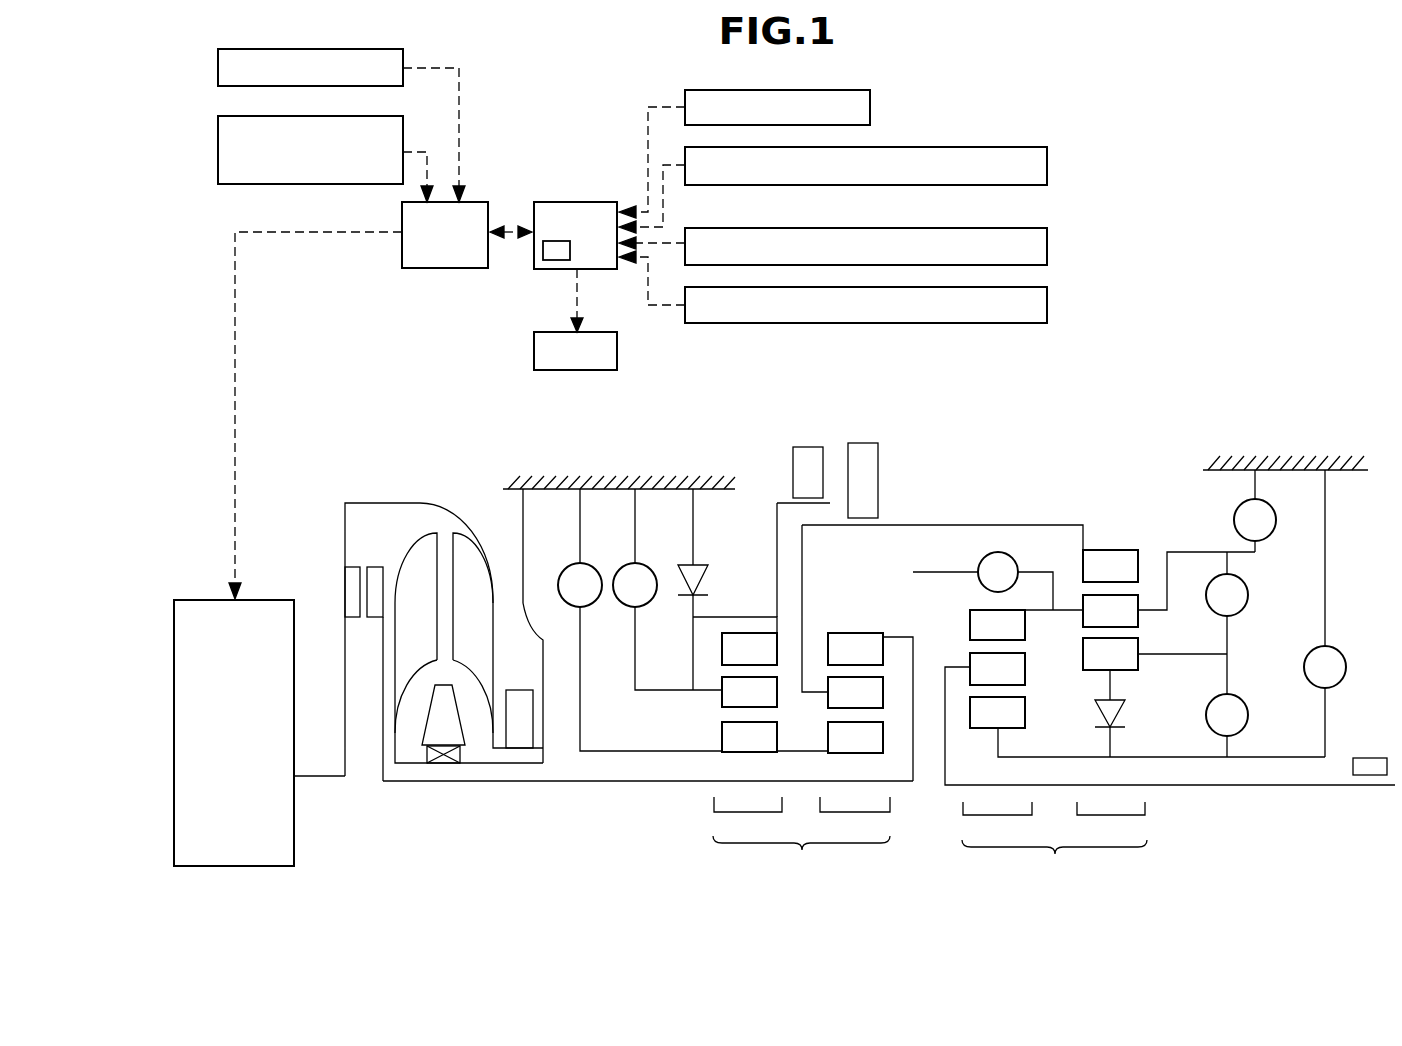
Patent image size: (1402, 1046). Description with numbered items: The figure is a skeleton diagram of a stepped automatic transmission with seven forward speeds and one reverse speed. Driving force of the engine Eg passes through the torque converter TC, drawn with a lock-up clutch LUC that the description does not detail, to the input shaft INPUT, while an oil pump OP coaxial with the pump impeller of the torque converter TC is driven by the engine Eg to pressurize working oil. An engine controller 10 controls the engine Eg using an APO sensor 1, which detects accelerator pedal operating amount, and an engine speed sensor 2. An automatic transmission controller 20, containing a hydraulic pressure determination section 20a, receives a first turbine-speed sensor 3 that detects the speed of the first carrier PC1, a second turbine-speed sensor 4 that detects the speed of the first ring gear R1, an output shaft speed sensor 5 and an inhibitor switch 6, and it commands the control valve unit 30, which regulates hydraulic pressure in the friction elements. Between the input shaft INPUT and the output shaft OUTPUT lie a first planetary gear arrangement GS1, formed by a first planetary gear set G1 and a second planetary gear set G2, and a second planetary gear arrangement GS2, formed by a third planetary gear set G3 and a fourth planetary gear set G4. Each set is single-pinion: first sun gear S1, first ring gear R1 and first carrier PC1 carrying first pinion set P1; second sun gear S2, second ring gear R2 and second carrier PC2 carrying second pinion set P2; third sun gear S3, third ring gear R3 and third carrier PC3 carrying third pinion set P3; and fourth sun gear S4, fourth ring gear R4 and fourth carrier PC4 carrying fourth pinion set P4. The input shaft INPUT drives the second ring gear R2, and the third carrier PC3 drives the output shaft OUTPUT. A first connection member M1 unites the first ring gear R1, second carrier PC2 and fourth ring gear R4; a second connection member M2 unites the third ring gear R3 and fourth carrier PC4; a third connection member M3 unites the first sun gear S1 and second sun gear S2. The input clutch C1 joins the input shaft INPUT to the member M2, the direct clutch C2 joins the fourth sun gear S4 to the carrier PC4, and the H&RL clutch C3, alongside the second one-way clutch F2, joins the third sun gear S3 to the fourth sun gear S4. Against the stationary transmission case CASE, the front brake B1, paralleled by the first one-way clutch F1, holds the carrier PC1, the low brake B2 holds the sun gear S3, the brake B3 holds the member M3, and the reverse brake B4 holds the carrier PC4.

The APO sensor 1 is at (218, 68).
The engine speed sensor 2 is at (218, 146).
The first turbine-speed sensor 3 is at (1047, 167).
The second turbine-speed sensor 4 is at (1047, 247).
The output shaft speed sensor 5 is at (1047, 307).
The inhibitor switch 6 is at (870, 107).
The engine controller (ECU) 10 is at (445, 268).
The automatic transmission controller (ATCU) 20 is at (568, 202).
The hydraulic pressure determination section 20a is at (556, 260).
The control valve unit (CVU) 30 is at (534, 351).
The engine Eg is at (263, 598).
The torque converter TC is at (438, 482).
The lockup clutch LUC is at (360, 548).
The oil pump OP is at (515, 690).
The transmission case CASE is at (603, 500).
The front brake B1 is at (667, 589).
The low brake B2 is at (1325, 613).
The 2346-brake B3 is at (640, 620).
The reverse brake B4 is at (1255, 511).
The input clutch C1 is at (968, 666).
The direct clutch C2 is at (1227, 623).
The H&RL clutch C3 is at (1227, 725).
The first one-way clutch F1 is at (710, 548).
The second one-way clutch F2 is at (1140, 716).
The first ring gear R1 is at (749, 649).
The first planet pinion set P1 is at (749, 692).
The first sun gear S1 is at (749, 737).
The first planet-pinion carrier PC1 is at (720, 693).
The second ring gear R2 is at (855, 649).
The second planet pinion set P2 is at (855, 692).
The second sun gear S2 is at (855, 737).
The second planet-pinion carrier PC2 is at (815, 693).
The third ring gear R3 is at (997, 625).
The third planet pinion set P3 is at (997, 669).
The third sun gear S3 is at (997, 712).
The third planet-pinion carrier PC3 is at (960, 666).
The fourth ring gear R4 is at (1110, 566).
The fourth planet pinion set P4 is at (1110, 611).
The fourth sun gear S4 is at (1155, 654).
The fourth planet-pinion carrier PC4 is at (1147, 613).
The first connection member M1 is at (980, 525).
The second connection member M2 is at (1047, 610).
The third connection member M3 is at (813, 753).
The first planetary gear set G1 is at (748, 817).
The second planetary gear set G2 is at (855, 817).
The third planetary gear set G3 is at (997, 821).
The fourth planetary gear set G4 is at (1111, 821).
The first planetary gear arrangement GS1 is at (801, 856).
The second planetary gear arrangement GS2 is at (1054, 859).
The input shaft INPUT is at (600, 783).
The output shaft OUTPUT is at (1280, 788).